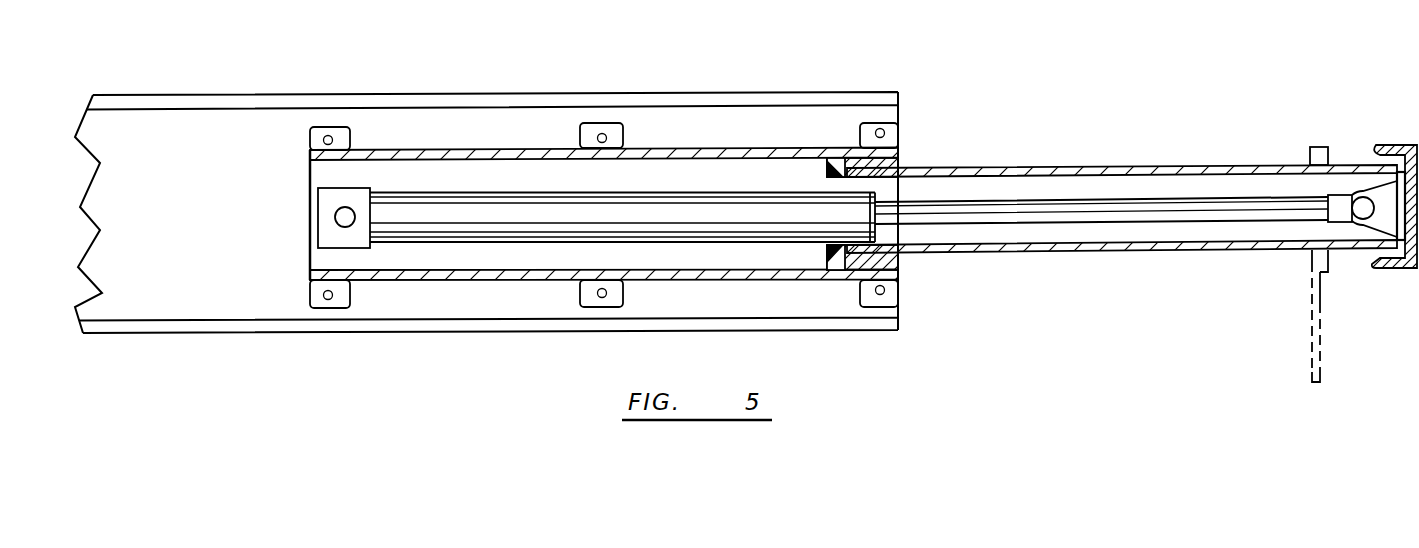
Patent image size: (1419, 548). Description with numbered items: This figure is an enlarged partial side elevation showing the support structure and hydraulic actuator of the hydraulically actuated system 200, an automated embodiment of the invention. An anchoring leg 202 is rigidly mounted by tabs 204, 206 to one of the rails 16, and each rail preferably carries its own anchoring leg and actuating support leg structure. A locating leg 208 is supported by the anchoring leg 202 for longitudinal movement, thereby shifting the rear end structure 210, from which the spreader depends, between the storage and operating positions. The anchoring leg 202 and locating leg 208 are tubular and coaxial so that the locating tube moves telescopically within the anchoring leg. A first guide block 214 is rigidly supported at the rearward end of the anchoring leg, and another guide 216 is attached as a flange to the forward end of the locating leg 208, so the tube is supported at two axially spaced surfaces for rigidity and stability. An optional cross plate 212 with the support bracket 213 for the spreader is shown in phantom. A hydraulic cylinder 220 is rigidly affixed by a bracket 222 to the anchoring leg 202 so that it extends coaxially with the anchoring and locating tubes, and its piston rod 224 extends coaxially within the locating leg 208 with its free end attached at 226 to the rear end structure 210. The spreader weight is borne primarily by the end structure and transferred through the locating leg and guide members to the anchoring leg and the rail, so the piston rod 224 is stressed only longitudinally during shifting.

The rail 16 is at (447, 93).
The hydraulically actuated system 200 is at (895, 62).
The anchoring leg 202 is at (507, 148).
The tab 204 is at (310, 141).
The tab 206 is at (860, 130).
The locating leg 208 is at (1037, 168).
The rear end structure 210 is at (1398, 143).
The cross plate 212 is at (1318, 147).
The support bracket 213 is at (1322, 365).
The first guide block 214 is at (900, 157).
The guide 216 is at (827, 160).
The hydraulic cylinder 220 is at (502, 240).
The bracket 222 is at (338, 221).
The piston rod 224 is at (1197, 217).
The attachment point 226 is at (1363, 210).